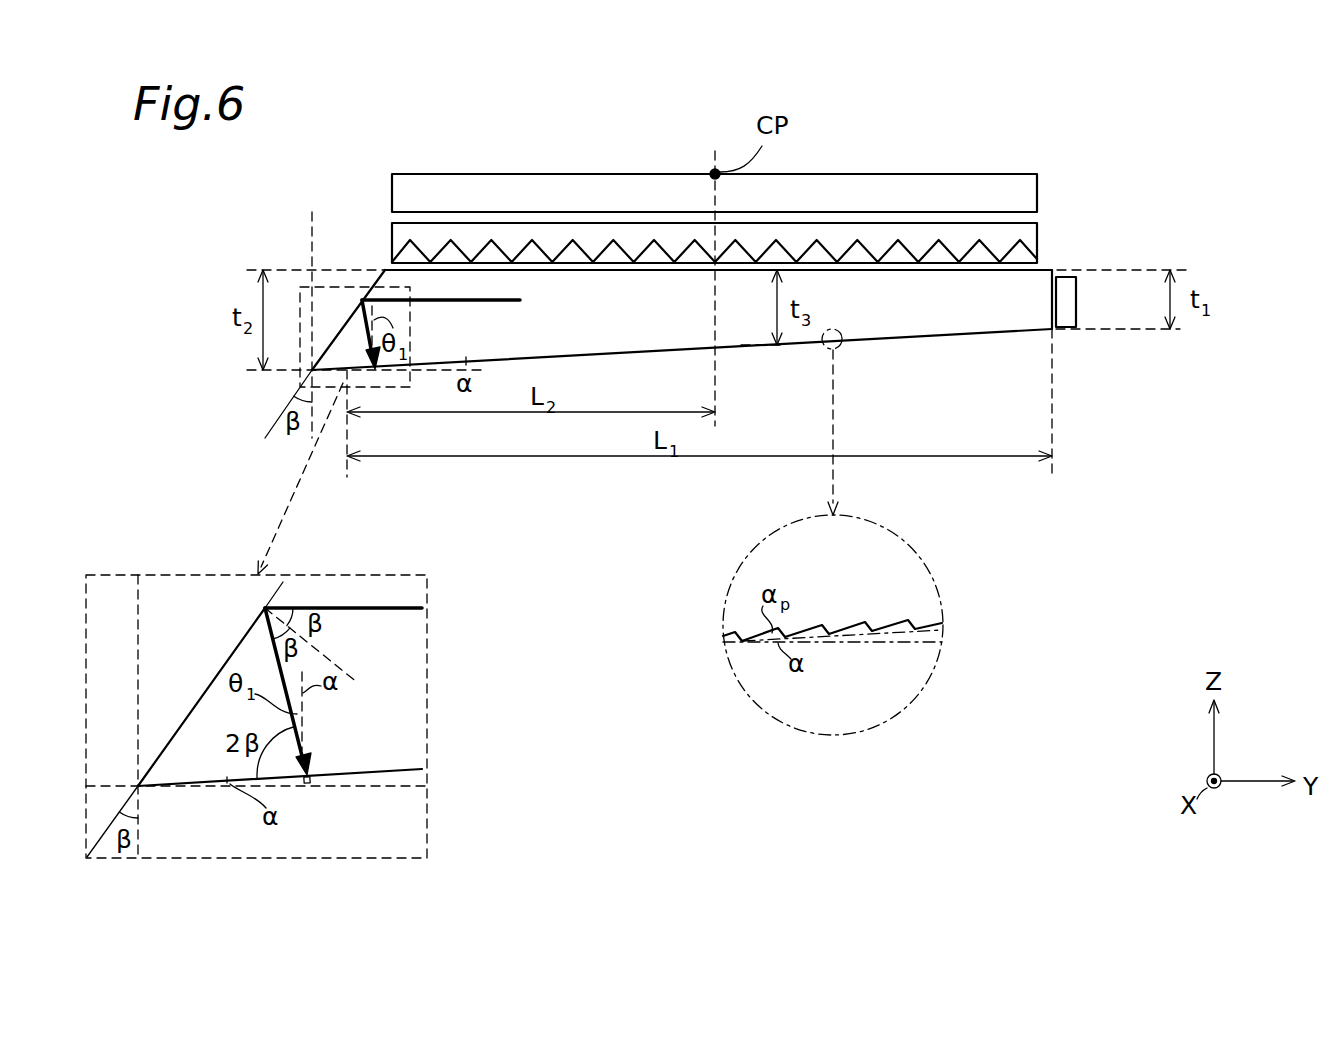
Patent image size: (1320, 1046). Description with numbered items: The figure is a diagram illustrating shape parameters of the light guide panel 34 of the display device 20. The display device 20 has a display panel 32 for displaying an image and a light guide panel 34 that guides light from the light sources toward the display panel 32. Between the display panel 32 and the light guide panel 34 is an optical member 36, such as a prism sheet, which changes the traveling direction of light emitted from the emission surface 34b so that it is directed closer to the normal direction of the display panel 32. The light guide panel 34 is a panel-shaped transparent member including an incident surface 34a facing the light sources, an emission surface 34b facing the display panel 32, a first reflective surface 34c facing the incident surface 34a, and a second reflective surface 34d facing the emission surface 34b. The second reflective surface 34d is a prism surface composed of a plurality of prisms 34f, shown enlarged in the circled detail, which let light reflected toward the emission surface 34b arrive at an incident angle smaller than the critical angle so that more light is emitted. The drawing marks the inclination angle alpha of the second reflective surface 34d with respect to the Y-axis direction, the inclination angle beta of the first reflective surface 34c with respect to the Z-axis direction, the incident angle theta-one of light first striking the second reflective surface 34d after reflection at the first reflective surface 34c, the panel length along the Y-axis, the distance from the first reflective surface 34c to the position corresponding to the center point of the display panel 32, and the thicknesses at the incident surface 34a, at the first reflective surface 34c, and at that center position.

The display device 20 is at (1081, 146).
The display panel 32 is at (1037, 191).
The optical member 36 is at (1037, 239).
The light guide panel 34 is at (614, 541).
The incident surface 34a is at (1061, 330).
The emission surface 34b is at (385, 269).
The first reflective surface 34c is at (350, 320).
The second reflective surface 34d is at (868, 340).
The prism 34f is at (882, 628).